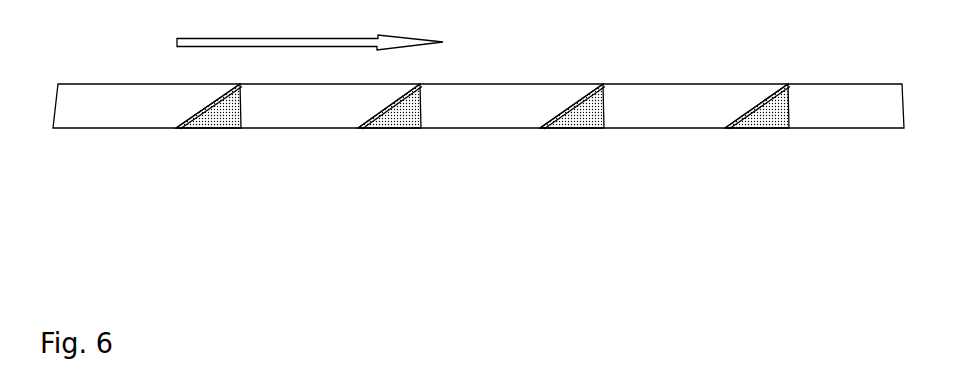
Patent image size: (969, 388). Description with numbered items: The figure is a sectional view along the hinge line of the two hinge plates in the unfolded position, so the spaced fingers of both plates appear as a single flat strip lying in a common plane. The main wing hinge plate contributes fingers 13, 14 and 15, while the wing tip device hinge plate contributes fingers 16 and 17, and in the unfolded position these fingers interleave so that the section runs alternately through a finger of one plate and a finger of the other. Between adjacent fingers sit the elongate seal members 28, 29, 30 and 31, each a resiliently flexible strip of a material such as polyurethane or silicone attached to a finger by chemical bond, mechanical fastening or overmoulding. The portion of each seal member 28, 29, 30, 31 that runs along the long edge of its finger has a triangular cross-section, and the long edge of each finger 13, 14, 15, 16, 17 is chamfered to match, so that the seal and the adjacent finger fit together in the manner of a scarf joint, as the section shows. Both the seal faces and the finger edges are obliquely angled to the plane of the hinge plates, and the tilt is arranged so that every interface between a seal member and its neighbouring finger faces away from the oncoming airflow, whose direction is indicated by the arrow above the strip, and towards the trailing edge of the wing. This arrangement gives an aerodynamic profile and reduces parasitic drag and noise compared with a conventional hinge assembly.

The finger 13 is at (109, 115).
The finger 14 is at (474, 128).
The finger 15 is at (836, 128).
The finger 16 is at (287, 120).
The finger 17 is at (657, 120).
The seal member 28 is at (407, 128).
The seal member 29 is at (767, 128).
The seal member 30 is at (230, 128).
The seal member 31 is at (590, 128).